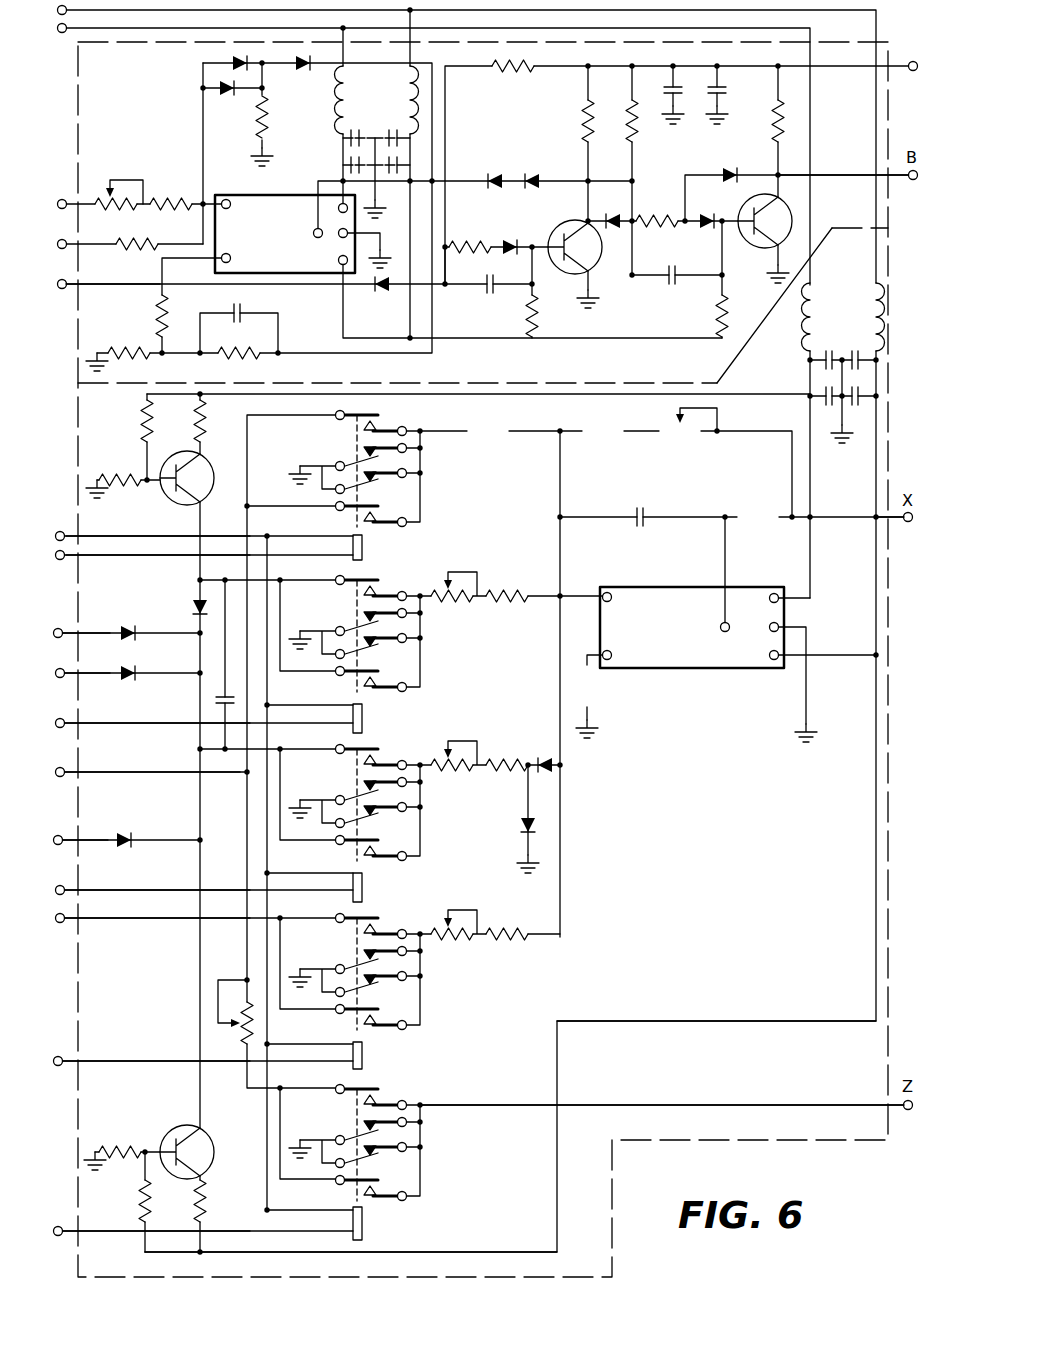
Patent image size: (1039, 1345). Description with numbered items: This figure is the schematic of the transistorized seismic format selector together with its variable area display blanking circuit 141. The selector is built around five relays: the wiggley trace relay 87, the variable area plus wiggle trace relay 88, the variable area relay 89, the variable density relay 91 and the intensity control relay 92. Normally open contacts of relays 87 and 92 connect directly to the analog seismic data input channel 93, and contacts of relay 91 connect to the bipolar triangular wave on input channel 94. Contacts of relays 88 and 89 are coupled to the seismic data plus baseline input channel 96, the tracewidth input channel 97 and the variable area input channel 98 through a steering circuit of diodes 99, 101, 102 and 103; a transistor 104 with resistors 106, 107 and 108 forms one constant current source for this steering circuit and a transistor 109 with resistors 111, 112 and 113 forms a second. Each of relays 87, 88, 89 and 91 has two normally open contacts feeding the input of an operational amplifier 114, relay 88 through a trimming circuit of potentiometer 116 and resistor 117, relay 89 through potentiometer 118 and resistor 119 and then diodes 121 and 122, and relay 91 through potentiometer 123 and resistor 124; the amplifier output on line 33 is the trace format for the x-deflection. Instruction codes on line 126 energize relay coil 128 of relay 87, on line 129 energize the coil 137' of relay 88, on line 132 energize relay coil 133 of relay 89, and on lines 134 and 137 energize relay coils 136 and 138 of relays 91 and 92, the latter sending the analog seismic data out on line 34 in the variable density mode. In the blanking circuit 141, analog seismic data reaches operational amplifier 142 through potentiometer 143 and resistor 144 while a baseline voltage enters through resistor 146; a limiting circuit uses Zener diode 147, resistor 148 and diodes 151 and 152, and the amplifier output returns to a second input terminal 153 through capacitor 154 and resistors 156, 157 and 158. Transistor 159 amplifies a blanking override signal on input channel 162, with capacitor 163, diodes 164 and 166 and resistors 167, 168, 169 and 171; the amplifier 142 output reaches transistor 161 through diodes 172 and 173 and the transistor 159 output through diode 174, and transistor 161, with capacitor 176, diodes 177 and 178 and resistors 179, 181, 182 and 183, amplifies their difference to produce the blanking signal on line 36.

The diode 151 is at (236, 58).
The Zener diode 147 is at (300, 57).
The diode 152 is at (227, 96).
The resistor 148 is at (270, 117).
The potentiometer 143 is at (125, 194).
The resistor 144 is at (171, 197).
The resistor 146 is at (152, 241).
The operational amplifier 142 is at (305, 234).
The second input terminal 153 is at (228, 254).
The input channel 162 is at (129, 283).
The resistor 157 is at (157, 312).
The resistor 156 is at (122, 339).
The capacitor 154 is at (244, 310).
The resistor 158 is at (247, 340).
The diode 166 is at (380, 292).
The resistor 167 is at (514, 72).
The resistor 168 is at (582, 120).
The resistor 179 is at (637, 129).
The diode 172 is at (492, 174).
The diode 173 is at (535, 174).
The diode 174 is at (613, 214).
The resistor 182 is at (657, 214).
The diode 177 is at (708, 214).
The resistor 171 is at (468, 241).
The diode 164 is at (511, 240).
The transistor 159 is at (593, 257).
The capacitor 176 is at (672, 267).
The capacitor 163 is at (488, 293).
The resistor 169 is at (538, 312).
The resistor 183 is at (715, 314).
The resistor 181 is at (772, 124).
The diode 178 is at (730, 168).
The line 36 is at (860, 174).
The transistor 161 is at (783, 231).
The variable area display blanking circuit 141 is at (768, 344).
The line 33 is at (851, 525).
The line 34 is at (800, 1104).
The resistor 107 is at (140, 422).
The resistor 108 is at (194, 422).
The resistor 106 is at (118, 472).
The transistor 104 is at (205, 488).
The wiggley trace relay 87 is at (405, 506).
The relay coil 128 is at (364, 547).
The line 126 is at (147, 562).
The seismic data plus baseline input channel 96 is at (104, 631).
The diode 99 is at (132, 628).
The diode 103 is at (192, 610).
The diode 101 is at (131, 670).
The tracewidth input channel 97 is at (104, 677).
The line 129 is at (163, 722).
The resistor 137' is at (380, 720).
The variable area plus wiggle trace relay 88 is at (405, 671).
The potentiometer 116 is at (452, 604).
The resistor 117 is at (509, 590).
The operational amplifier 114 is at (691, 632).
The analog seismic data input channel 93 is at (150, 771).
The variable area input channel 98 is at (101, 838).
The diode 102 is at (128, 836).
The resistor 119 is at (505, 758).
The diode 121 is at (545, 758).
The potentiometer 118 is at (452, 775).
The diode 122 is at (520, 826).
The variable area relay 89 is at (405, 840).
The line 132 is at (135, 889).
The relay coil 133 is at (364, 895).
The input channel 94 is at (129, 920).
The resistor 124 is at (509, 927).
The potentiometer 123 is at (452, 942).
The variable density relay 91 is at (405, 1009).
The line 134 is at (168, 1060).
The relay coil 136 is at (364, 1060).
The resistor 111 is at (120, 1145).
The transistor 109 is at (203, 1162).
The resistor 112 is at (138, 1200).
The resistor 113 is at (193, 1200).
The line 137 is at (157, 1216).
The relay coil 138 is at (364, 1230).
The intensity control relay 92 is at (405, 1180).